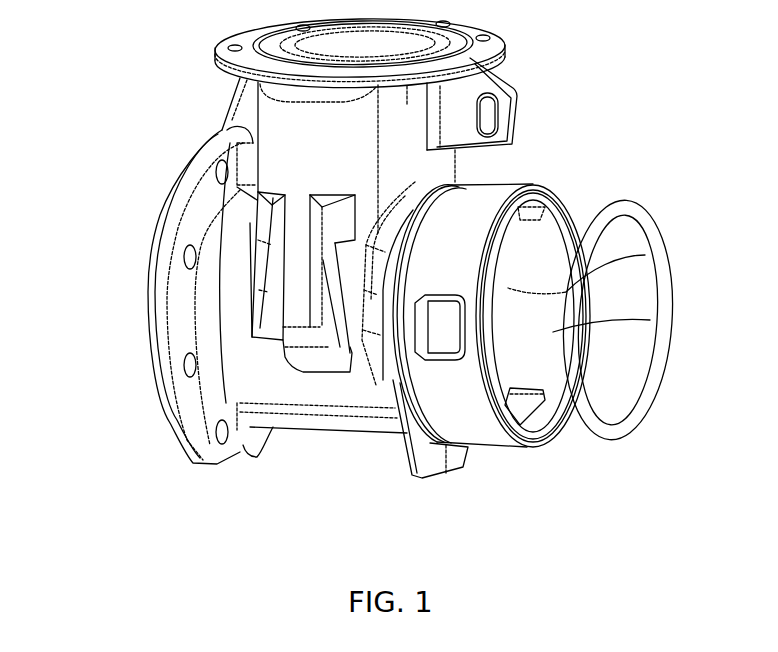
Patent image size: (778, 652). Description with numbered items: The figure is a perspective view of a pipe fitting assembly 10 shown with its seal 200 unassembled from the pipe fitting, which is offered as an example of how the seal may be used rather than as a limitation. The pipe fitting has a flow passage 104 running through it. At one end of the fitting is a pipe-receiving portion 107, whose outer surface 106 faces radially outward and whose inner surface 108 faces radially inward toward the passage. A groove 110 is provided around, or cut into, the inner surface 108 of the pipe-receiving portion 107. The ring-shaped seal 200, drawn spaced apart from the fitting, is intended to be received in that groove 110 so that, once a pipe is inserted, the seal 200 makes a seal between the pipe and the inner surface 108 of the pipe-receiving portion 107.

The pipe fitting assembly 10 is at (410, 269).
The flow passage 104 is at (344, 318).
The outer surface 106 is at (540, 272).
The pipe-receiving portion 107 is at (464, 451).
The inner surface 108 is at (647, 321).
The groove 110 is at (654, 269).
The seal 200 is at (649, 308).